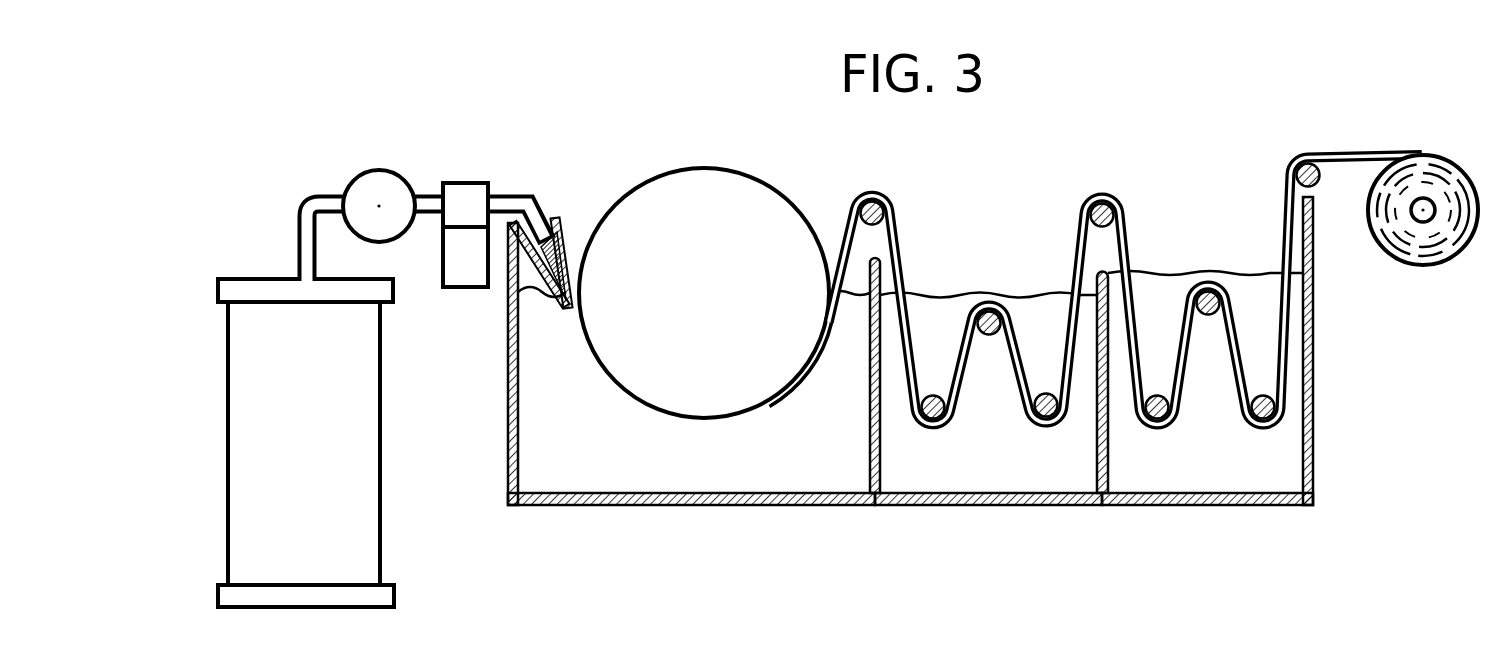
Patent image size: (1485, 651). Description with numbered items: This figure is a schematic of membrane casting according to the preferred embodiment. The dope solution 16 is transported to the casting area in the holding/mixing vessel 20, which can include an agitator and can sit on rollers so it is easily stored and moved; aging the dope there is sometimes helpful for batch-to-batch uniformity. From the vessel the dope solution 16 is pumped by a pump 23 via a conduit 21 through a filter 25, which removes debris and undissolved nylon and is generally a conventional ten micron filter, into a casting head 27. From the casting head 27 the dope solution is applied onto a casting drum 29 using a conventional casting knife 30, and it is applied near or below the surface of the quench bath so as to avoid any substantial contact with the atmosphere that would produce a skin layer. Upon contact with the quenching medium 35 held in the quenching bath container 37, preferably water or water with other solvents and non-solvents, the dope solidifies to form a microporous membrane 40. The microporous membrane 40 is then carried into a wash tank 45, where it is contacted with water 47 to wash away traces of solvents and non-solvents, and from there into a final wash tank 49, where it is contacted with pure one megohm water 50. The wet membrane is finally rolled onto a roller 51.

The dope solution 16 is at (250, 540).
The holding/mixing vessel 20 is at (265, 443).
The conduit 21 is at (305, 222).
The pump 23 is at (379, 180).
The filter 25 is at (470, 190).
The casting head 27 is at (567, 240).
The casting drum 29 is at (763, 180).
The casting knife 30 is at (512, 292).
The quenching medium 35 is at (528, 378).
The quenching bath container 37 is at (490, 436).
The microporous membrane 40 is at (1127, 243).
The wash tank 45 is at (1010, 505).
The water 47 is at (1045, 455).
The final wash tank 49 is at (1207, 506).
The pure 1 megohm water 50 is at (1278, 465).
The roller 51 is at (1435, 232).